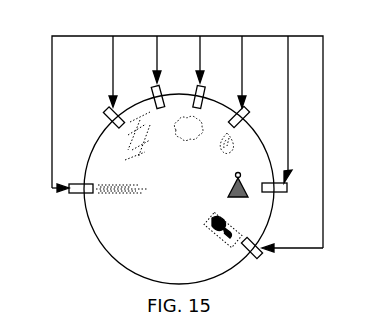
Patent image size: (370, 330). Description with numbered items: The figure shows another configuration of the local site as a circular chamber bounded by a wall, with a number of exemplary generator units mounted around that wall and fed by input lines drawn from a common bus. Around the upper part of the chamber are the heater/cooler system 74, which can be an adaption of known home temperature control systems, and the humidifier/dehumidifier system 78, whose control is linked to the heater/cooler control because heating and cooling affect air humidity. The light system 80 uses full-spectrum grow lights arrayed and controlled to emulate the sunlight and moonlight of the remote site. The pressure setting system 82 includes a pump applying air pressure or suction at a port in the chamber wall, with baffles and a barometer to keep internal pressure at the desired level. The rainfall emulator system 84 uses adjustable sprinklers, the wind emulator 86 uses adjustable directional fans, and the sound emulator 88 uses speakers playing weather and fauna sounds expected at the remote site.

The heater/cooler system 74 is at (246, 119).
The humidifier/dehumidifier system 78 is at (203, 109).
The light system 80 is at (107, 113).
The pressure setting system 82 is at (289, 172).
The rainfall emulator system 84 is at (157, 98).
The wind emulator 86 is at (80, 194).
The sound emulator 88 is at (211, 222).